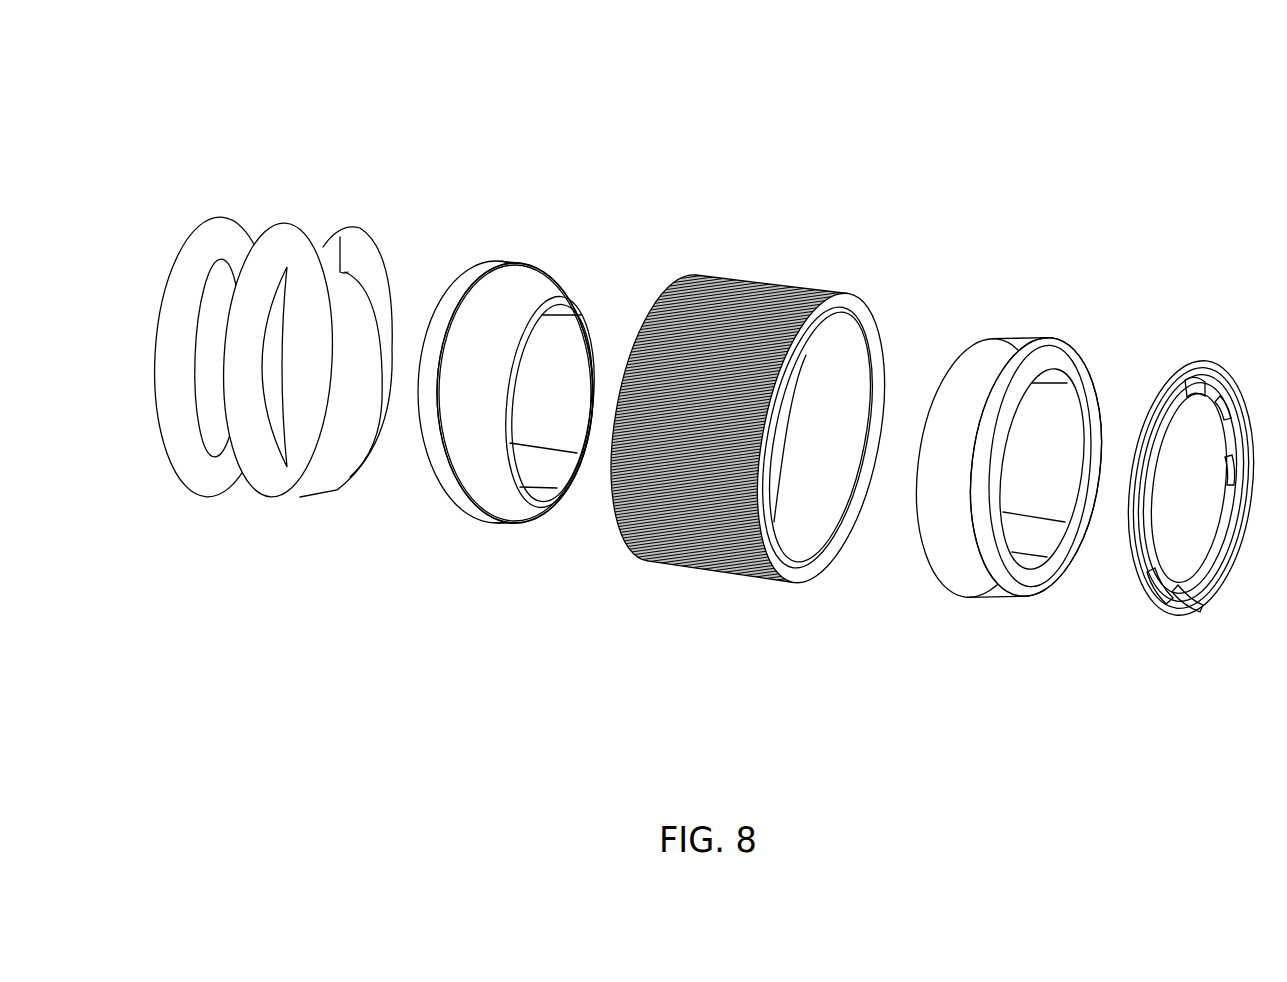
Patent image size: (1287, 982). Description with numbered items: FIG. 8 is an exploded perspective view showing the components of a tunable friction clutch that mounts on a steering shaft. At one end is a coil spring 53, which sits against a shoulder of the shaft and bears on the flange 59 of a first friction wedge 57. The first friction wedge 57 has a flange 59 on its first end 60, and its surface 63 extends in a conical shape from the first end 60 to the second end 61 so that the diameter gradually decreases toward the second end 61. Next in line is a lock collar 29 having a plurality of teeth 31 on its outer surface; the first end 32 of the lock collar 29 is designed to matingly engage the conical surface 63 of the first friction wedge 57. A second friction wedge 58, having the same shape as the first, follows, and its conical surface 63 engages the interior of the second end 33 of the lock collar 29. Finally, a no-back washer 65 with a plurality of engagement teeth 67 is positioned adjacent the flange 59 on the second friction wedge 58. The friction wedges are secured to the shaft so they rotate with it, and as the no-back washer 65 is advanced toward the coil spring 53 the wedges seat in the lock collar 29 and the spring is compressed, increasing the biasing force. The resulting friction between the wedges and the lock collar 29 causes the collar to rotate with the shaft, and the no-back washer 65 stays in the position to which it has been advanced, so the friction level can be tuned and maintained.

The lock collar 29 is at (753, 411).
The teeth 31 is at (808, 285).
The first end 32 is at (676, 268).
The second end 33 is at (810, 587).
The coil spring 53 is at (283, 223).
The first friction wedge 57 is at (540, 280).
The second friction wedge 58 is at (1045, 333).
The flange 59 is at (442, 517).
The first end 60 is at (467, 280).
The second end 61 is at (543, 508).
The conical surface 63 is at (492, 492).
The no-back washer 65 is at (1191, 494).
The engagement teeth 67 is at (1180, 617).